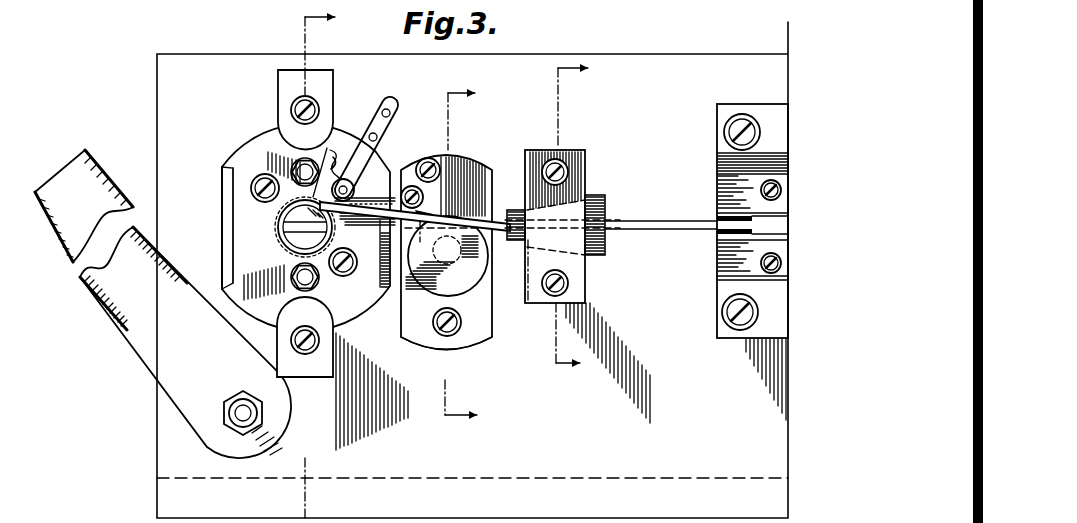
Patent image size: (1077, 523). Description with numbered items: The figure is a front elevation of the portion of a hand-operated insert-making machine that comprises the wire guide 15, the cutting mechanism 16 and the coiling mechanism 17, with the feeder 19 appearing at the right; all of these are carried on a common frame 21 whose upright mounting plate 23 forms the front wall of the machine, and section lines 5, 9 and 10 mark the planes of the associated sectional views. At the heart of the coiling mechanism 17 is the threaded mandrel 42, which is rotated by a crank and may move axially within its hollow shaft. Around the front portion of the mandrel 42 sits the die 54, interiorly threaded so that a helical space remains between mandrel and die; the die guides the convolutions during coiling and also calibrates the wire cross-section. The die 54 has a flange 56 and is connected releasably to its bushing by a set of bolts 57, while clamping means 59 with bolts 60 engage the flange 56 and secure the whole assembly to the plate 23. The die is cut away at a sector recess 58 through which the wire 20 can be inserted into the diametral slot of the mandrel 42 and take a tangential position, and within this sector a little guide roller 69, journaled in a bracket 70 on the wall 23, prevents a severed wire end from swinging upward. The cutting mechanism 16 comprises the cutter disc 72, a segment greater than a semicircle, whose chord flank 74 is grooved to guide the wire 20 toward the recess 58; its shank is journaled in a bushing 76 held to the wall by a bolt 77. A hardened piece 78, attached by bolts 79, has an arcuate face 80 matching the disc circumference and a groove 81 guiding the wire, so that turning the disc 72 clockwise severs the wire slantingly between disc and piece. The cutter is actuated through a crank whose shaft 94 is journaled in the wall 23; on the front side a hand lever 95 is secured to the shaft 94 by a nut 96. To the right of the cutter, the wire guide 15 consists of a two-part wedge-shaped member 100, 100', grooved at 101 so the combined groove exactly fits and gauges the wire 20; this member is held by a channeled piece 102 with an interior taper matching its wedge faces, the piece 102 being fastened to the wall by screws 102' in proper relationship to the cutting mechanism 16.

The section line 5- 5 is at (308, 265).
The section line 9- 9 is at (461, 258).
The section line 10- 10 is at (586, 227).
The wire guide 15 is at (591, 155).
The cutting mechanism 16 is at (482, 162).
The coiling mechanism 17 is at (261, 131).
The feeder 19 is at (716, 297).
The wire 20 is at (691, 224).
The frame 21 is at (545, 481).
The mounting plate 23 is at (158, 96).
The mandrel 42 is at (292, 230).
The die 54 is at (232, 236).
The flange 56 is at (222, 195).
The bolts 57 is at (348, 278).
The recess 58 is at (336, 158).
The clamping means 59 is at (279, 77).
The bolts 60 is at (307, 97).
The guide roller 69 is at (342, 160).
The bracket 70 is at (373, 149).
The cutter disc 72 is at (462, 283).
The flank 74 is at (470, 219).
The bushing 76 is at (473, 327).
The bolt 77 is at (447, 336).
The hardened piece 78 is at (408, 168).
The bolts 79 is at (432, 165).
The arcuate face 80 is at (420, 212).
The groove 81 is at (438, 243).
The shaft 94 is at (240, 416).
The hand lever 95 is at (155, 378).
The nut 96 is at (282, 420).
The wedge-shaped guide member part 100 is at (570, 249).
The wedge-shaped guide member part 100' is at (582, 173).
The groove 101 is at (603, 205).
The channeled piece 102 is at (541, 313).
The screws 102' is at (567, 148).